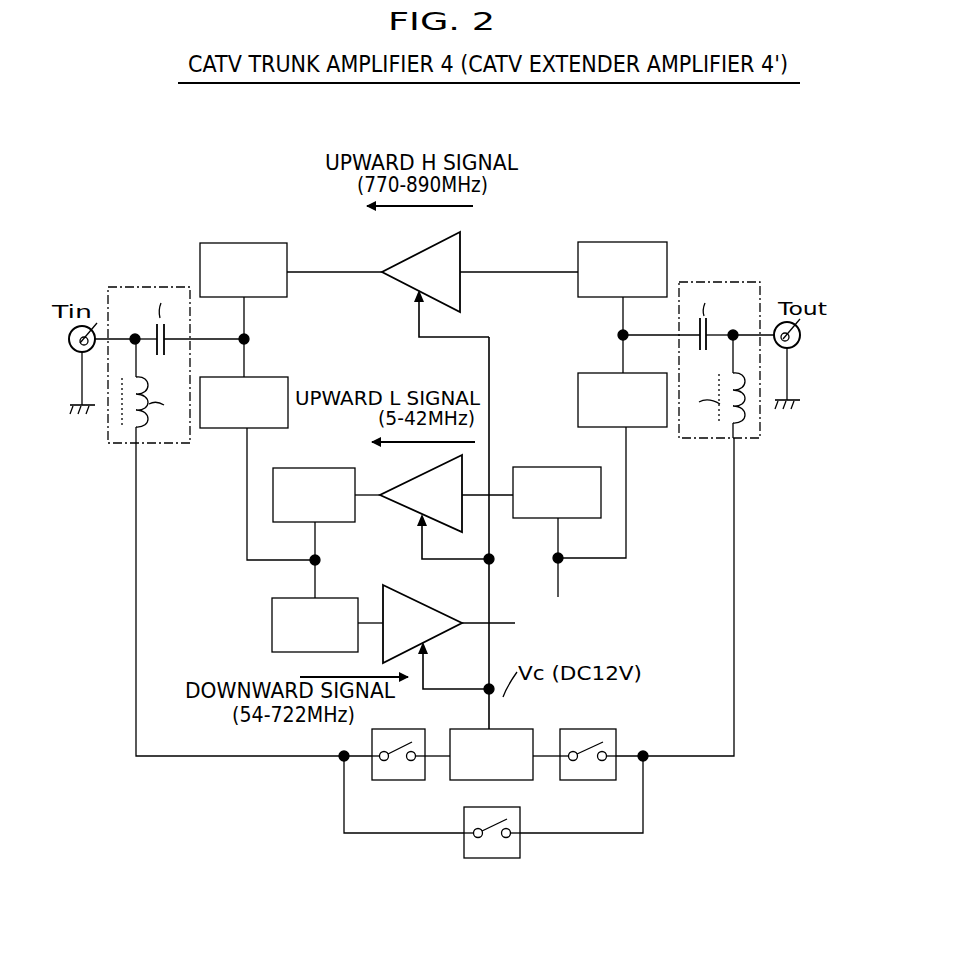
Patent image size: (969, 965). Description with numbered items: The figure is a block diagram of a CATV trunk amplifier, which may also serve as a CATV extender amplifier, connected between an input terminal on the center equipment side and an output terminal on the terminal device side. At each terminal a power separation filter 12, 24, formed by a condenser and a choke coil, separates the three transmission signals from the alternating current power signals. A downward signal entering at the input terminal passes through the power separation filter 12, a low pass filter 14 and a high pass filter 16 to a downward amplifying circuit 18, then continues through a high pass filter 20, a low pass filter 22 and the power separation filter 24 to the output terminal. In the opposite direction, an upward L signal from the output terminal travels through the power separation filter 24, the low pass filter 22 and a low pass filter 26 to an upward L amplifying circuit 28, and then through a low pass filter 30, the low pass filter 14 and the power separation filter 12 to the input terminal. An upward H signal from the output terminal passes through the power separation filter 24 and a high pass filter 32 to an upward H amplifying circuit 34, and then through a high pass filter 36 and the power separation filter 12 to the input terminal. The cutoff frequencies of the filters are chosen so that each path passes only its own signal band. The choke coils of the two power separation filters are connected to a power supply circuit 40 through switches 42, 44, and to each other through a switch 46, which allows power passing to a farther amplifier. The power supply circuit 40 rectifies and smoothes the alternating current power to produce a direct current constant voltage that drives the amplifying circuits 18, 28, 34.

The power separation filter 12 is at (160, 285).
The low pass filter 14 is at (268, 377).
The high pass filter 16 is at (285, 598).
The downward amplifying circuit 18 is at (428, 608).
The high pass filter 20 is at (435, 545).
The low pass filter 22 is at (592, 373).
The power separation filter 24 is at (737, 282).
The low pass filter 26 is at (583, 467).
The upward L amplifying circuit 28 is at (400, 490).
The low pass filter 30 is at (290, 468).
The high pass filter 32 is at (593, 242).
The upward H amplifying circuit 34 is at (398, 266).
The high pass filter 36 is at (272, 243).
The power supply circuit 40 is at (505, 729).
The switch 42 is at (407, 729).
The switch 44 is at (594, 729).
The switch 46 is at (505, 807).